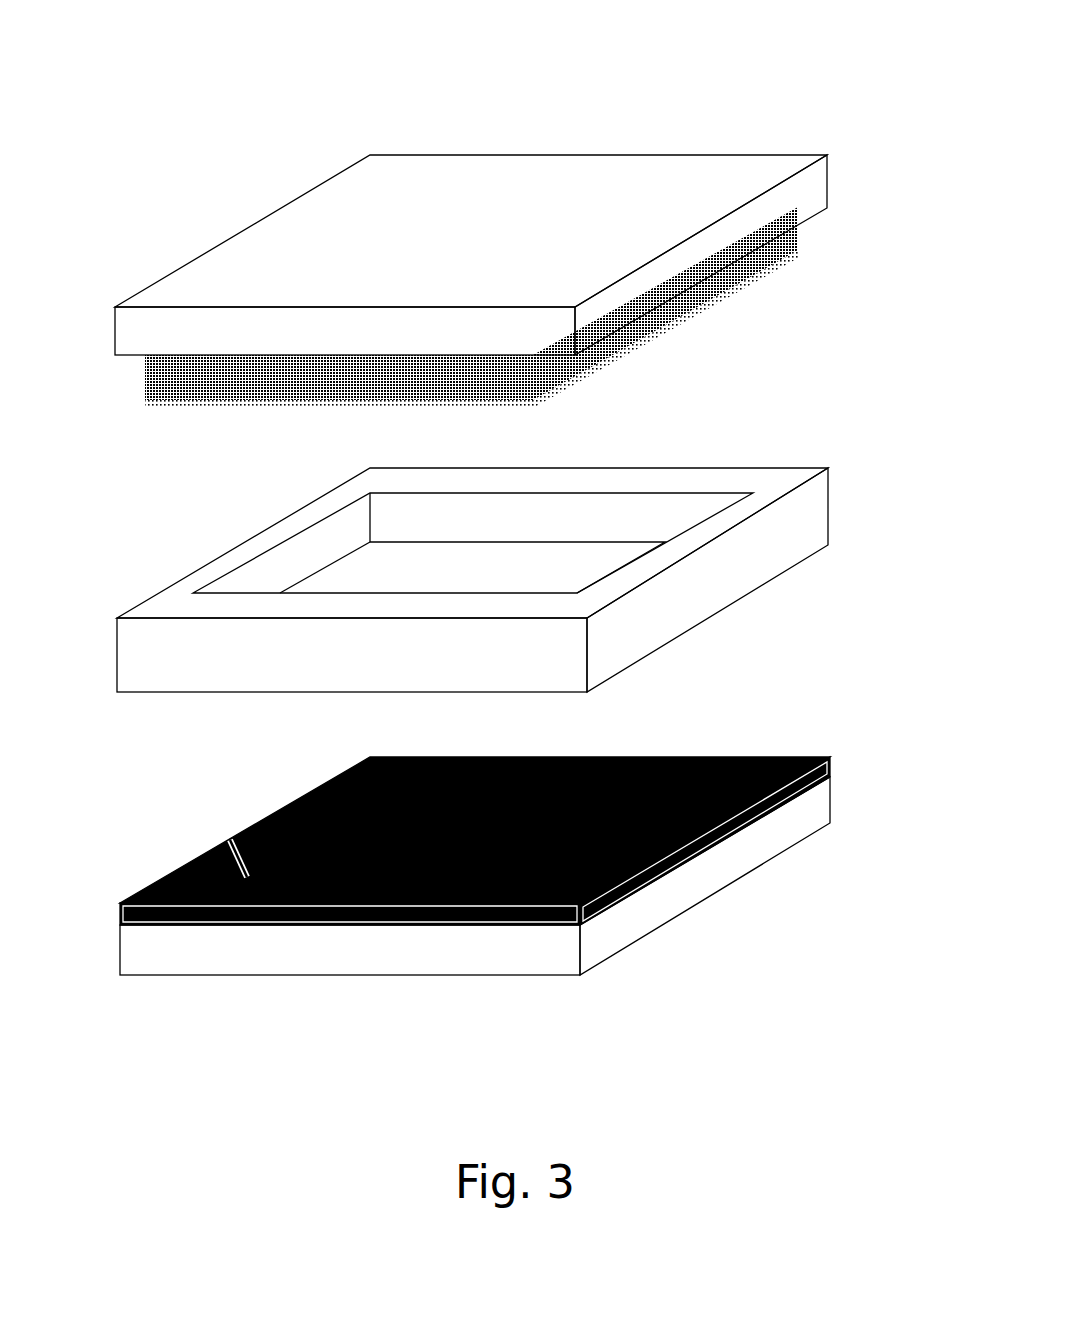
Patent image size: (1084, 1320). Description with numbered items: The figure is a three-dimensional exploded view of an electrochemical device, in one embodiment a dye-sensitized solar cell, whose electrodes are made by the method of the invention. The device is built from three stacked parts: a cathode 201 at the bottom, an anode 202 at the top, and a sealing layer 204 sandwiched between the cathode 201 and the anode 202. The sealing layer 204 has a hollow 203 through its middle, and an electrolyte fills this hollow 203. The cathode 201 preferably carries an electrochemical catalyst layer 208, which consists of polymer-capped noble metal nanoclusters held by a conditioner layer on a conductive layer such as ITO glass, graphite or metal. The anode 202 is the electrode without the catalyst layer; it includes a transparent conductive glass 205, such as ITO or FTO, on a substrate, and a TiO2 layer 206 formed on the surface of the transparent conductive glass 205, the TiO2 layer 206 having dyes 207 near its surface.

The cathode 201 is at (518, 808).
The anode 202 is at (518, 213).
The hollow 203 is at (377, 570).
The sealing layer 204 is at (503, 558).
The transparent conductive glass 205 is at (317, 243).
The TiO2 layer 206 is at (798, 227).
The dyes 207 is at (647, 342).
The electrochemical catalyst layer 208 is at (230, 840).